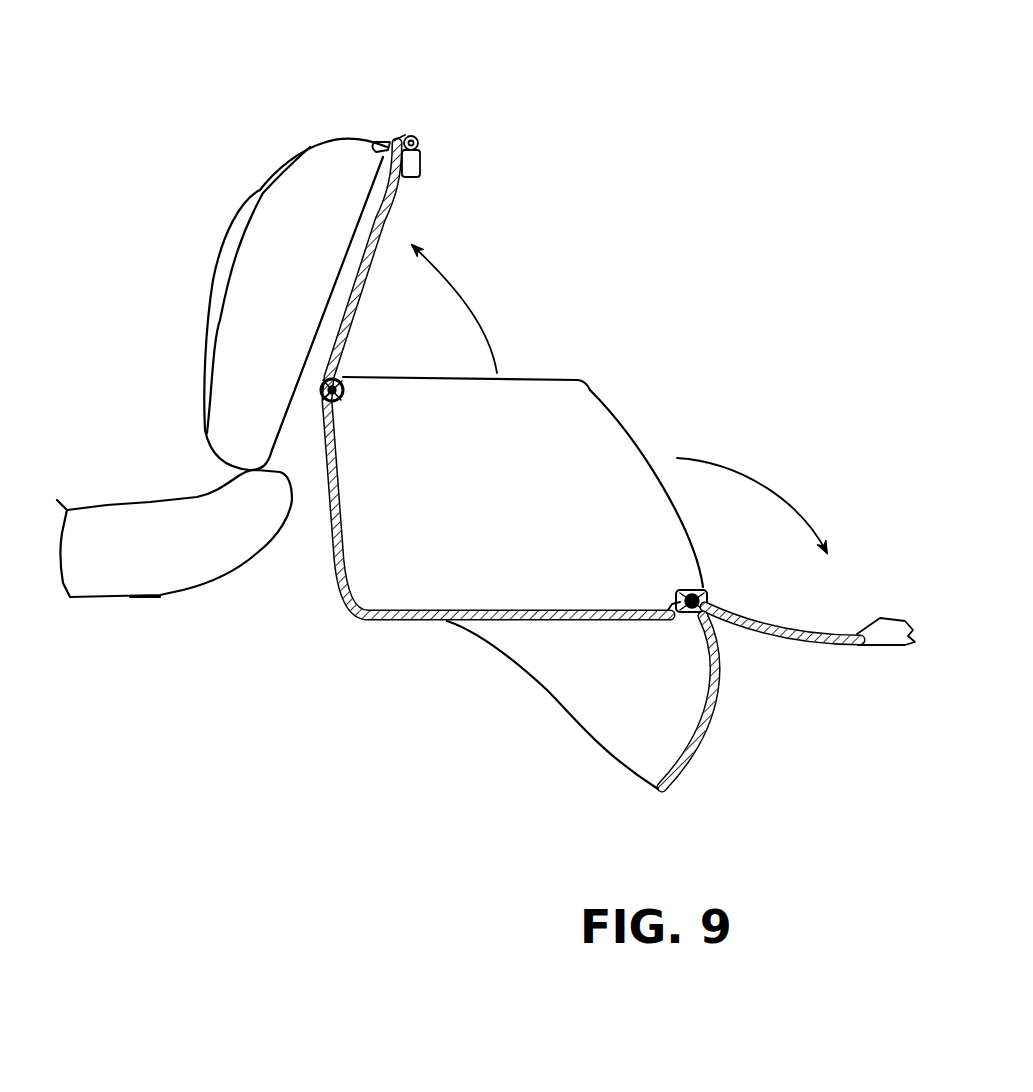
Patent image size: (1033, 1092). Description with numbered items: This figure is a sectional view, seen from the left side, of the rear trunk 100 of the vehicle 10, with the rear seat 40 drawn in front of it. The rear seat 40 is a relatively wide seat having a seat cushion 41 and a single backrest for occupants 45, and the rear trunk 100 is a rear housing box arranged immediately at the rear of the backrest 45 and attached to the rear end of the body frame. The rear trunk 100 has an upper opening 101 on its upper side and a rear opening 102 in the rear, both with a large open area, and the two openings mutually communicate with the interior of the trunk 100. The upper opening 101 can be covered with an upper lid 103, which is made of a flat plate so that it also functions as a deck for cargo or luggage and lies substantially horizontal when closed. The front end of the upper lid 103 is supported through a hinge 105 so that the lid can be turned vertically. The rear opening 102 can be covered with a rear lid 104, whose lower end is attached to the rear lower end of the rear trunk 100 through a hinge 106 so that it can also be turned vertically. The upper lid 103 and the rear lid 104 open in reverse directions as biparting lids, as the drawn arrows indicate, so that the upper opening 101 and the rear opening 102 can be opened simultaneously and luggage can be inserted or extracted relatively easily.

The vehicle 10 is at (814, 148).
The rear seat 40 is at (155, 600).
The seat cushion 41 is at (103, 517).
The backrest for occupants 45 is at (263, 257).
The rear trunk 100 is at (402, 622).
The upper opening 101 is at (533, 377).
The rear opening 102 is at (640, 440).
The upper lid 103 is at (410, 203).
The rear lid 104 is at (810, 645).
The hinge 105 is at (340, 397).
The hinge 106 is at (703, 587).